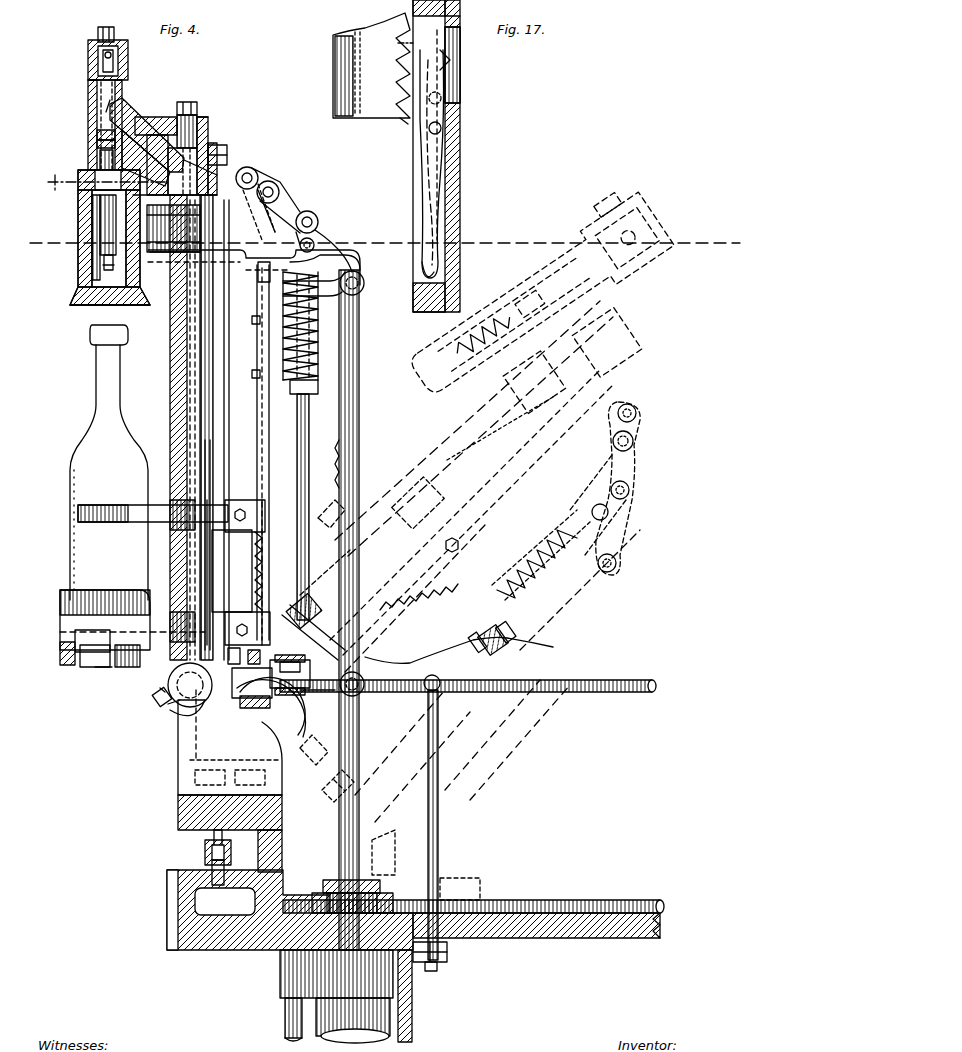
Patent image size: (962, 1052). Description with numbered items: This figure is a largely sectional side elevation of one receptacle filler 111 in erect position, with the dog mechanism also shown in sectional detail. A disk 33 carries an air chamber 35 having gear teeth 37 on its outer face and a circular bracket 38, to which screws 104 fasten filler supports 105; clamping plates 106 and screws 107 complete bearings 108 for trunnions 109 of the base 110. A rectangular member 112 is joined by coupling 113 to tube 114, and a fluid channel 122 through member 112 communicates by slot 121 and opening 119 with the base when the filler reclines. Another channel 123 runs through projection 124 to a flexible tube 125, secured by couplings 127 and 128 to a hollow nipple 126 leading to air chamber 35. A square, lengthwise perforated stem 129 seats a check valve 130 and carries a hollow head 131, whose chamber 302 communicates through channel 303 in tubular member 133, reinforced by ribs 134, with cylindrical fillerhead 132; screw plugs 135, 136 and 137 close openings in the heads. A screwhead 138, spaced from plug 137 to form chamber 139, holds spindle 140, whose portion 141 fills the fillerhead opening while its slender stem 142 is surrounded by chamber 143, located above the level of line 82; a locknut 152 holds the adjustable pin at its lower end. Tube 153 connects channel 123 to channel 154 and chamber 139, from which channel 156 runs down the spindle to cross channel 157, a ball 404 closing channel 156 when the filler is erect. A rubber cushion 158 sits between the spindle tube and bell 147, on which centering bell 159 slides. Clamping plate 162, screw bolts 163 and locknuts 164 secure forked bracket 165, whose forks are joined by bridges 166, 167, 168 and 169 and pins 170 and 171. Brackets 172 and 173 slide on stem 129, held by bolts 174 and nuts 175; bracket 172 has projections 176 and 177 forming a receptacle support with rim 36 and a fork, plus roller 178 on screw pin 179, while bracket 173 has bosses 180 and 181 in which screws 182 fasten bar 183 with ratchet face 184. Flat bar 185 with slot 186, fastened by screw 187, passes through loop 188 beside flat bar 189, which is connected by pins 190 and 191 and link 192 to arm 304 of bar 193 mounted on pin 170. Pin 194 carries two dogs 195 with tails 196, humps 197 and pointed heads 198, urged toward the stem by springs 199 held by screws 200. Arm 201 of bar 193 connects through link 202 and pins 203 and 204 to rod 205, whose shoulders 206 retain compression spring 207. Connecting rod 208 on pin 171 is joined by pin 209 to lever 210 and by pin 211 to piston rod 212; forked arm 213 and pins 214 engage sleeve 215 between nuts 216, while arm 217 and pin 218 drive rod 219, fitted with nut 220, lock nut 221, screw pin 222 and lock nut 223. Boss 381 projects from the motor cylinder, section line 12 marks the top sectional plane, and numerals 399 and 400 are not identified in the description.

In FIG. 4, the section line 12 is at (60, 182).
In FIG. 4, the disk 33 is at (272, 935).
In FIG. 4, the air chamber 35 is at (225, 901).
In FIG. 4, the rim 36 is at (60, 597).
In FIG. 4, the gear teeth 37 is at (170, 925).
In FIG. 4, the circular bracket 38 is at (178, 815).
In FIG. 4, the level line 82 is at (740, 222).
In FIG. 4, the screws 104 is at (260, 763).
In FIG. 4, the filler supports 105 is at (178, 748).
In FIG. 4, the clamping plates 106 is at (168, 708).
In FIG. 4, the screws 107 is at (170, 680).
In FIG. 4, the bearings 108 is at (232, 712).
In FIG. 4, the trunnions 109 is at (175, 712).
In FIG. 4, the base 110 is at (168, 652).
In FIG. 4, the receptacle filler 111 is at (200, 412).
In FIG. 4, the rectangular member 112 is at (262, 700).
In FIG. 4, the coupling 113 is at (280, 675).
In FIG. 4, the tube 114 is at (555, 695).
In FIG. 4, the opening 119 is at (84, 657).
In FIG. 4, the slot 121 is at (180, 730).
In FIG. 4, the fluid channel 122 is at (160, 690).
In FIG. 4, the channel 123 is at (236, 660).
In FIG. 4, the projection 124 is at (260, 660).
In FIG. 4, the flexible tube 125 is at (302, 740).
In FIG. 4, the hollow nipple 126 is at (205, 852).
In FIG. 4, the coupling 127 is at (302, 705).
In FIG. 4, the coupling 128 is at (222, 845).
In FIG. 4, the stem 129 is at (180, 375).
In FIG. 4, the check valve 130 is at (150, 590).
In FIG. 4, the hollow head 131 is at (206, 150).
In FIG. 4, the fillerhead 132 is at (120, 92).
In FIG. 4, the tubular member 133 is at (148, 120).
In FIG. 4, the ribs 134 is at (110, 158).
In FIG. 4, the screw plug 135 is at (228, 150).
In FIG. 4, the screw plug 136 is at (186, 102).
In FIG. 4, the screw plug 137 is at (112, 18).
In FIG. 4, the screwhead 138 is at (117, 66).
In FIG. 4, the chamber 139 is at (113, 54).
In FIG. 4, the spindle 140 is at (100, 215).
In FIG. 4, the spindle portion 141 is at (90, 101).
In FIG. 4, the slender stem 142 is at (90, 129).
In FIG. 4, the chamber 143 is at (90, 117).
In FIG. 4, the bell 147 is at (82, 205).
In FIG. 4, the locknut 152 is at (100, 255).
In FIG. 4, the tube 153 is at (222, 445).
In FIG. 4, the channel 154 is at (98, 145).
In FIG. 4, the channel 156 is at (104, 97).
In FIG. 4, the channel 157 is at (104, 266).
In FIG. 4, the annular rubber cushion 158 is at (84, 166).
In FIG. 4, the centering bell 159 is at (78, 290).
In FIG. 4, the clamping plate 162 is at (172, 260).
In FIG. 4, the screw bolts 163 is at (158, 258).
In FIG. 4, the locknuts 164 is at (165, 252).
In FIG. 4, the forked bracket 165 is at (345, 230).
In FIG. 4, the bridge 166 is at (262, 165).
In FIG. 4, the bridge 167 is at (246, 262).
In FIG. 4, the bridge 168 is at (272, 270).
In FIG. 4, the bridge 169 is at (350, 300).
In FIG. 4, the pin 170 is at (280, 185).
In FIG. 4, the pin 171 is at (364, 283).
In FIG. 4, the bracket 172 is at (208, 548).
In FIG. 4, the bracket 173 is at (215, 570).
In FIG. 4, the bolts 174 is at (207, 500).
In FIG. 4, the nuts 175 is at (245, 500).
In FIG. 4, the projection 176 is at (62, 635).
In FIG. 4, the projection 177 is at (78, 514).
In FIG. 4, the roller 178 is at (95, 672).
In FIG. 4, the screw pin 179 is at (60, 655).
In FIG. 4, the boss 180 is at (342, 478).
In FIG. 4, the boss 181 is at (160, 698).
In FIG. 4, the screws 182 is at (180, 528).
In FIG. 4, the bar 183 is at (342, 500).
In FIG. 17, the bar 183 is at (355, 45).
In FIG. 4, the ratchet face 184 is at (262, 560).
In FIG. 17, the ratchet face 184 is at (404, 120).
In FIG. 17, the flat bar 185 is at (462, 225).
In FIG. 17, the slot 186 is at (460, 72).
In FIG. 4, the screw 187 is at (315, 215).
In FIG. 4, the loop 188 is at (296, 662).
In FIG. 4, the flat bar 189 is at (257, 332).
In FIG. 4, the pin 190 is at (296, 215).
In FIG. 4, the pin 191 is at (280, 170).
In FIG. 4, the link 192 is at (262, 215).
In FIG. 4, the bar 193 is at (282, 210).
In FIG. 17, the pin 194 is at (441, 128).
In FIG. 4, the dogs 195 is at (258, 405).
In FIG. 17, the dogs 195 is at (432, 182).
In FIG. 17, the tails 196 is at (440, 268).
In FIG. 17, the humps 197 is at (448, 165).
In FIG. 17, the pointed heads 198 is at (450, 62).
In FIG. 17, the springs 199 is at (460, 40).
In FIG. 4, the screws 200 is at (255, 318).
In FIG. 4, the arm 201 is at (318, 225).
In FIG. 4, the link 202 is at (318, 245).
In FIG. 4, the pin 203 is at (330, 240).
In FIG. 4, the pin 204 is at (318, 245).
In FIG. 4, the rod 205 is at (312, 425).
In FIG. 4, the annular shoulders 206 is at (292, 395).
In FIG. 4, the compression spring 207 is at (322, 362).
In FIG. 4, the connecting rod 208 is at (320, 345).
In FIG. 4, the pin 209 is at (392, 632).
In FIG. 4, the lever 210 is at (395, 648).
In FIG. 4, the pin 211 is at (362, 690).
In FIG. 4, the piston rod 212 is at (372, 757).
In FIG. 4, the forked arm 213 is at (312, 625).
In FIG. 4, the pins 214 is at (362, 552).
In FIG. 4, the sleeve 215 is at (362, 528).
In FIG. 4, the nuts 216 is at (308, 610).
In FIG. 4, the arm 217 is at (478, 640).
In FIG. 4, the pin 218 is at (440, 690).
In FIG. 4, the rod 219 is at (440, 800).
In FIG. 4, the nut 220 is at (448, 947).
In FIG. 4, the lock nut 221 is at (440, 966).
In FIG. 4, the screw pin 222 is at (495, 612).
In FIG. 4, the lock nut 223 is at (520, 628).
In FIG. 4, the chamber 302 is at (218, 142).
In FIG. 4, the channel 303 is at (205, 118).
In FIG. 4, the arm 304 is at (276, 172).
In FIG. 4, the boss 381 is at (405, 990).
In FIG. 4, the bottle body 399 is at (85, 456).
In FIG. 4, the bottle mouth 400 is at (96, 318).
In FIG. 4, the ball 404 is at (88, 52).